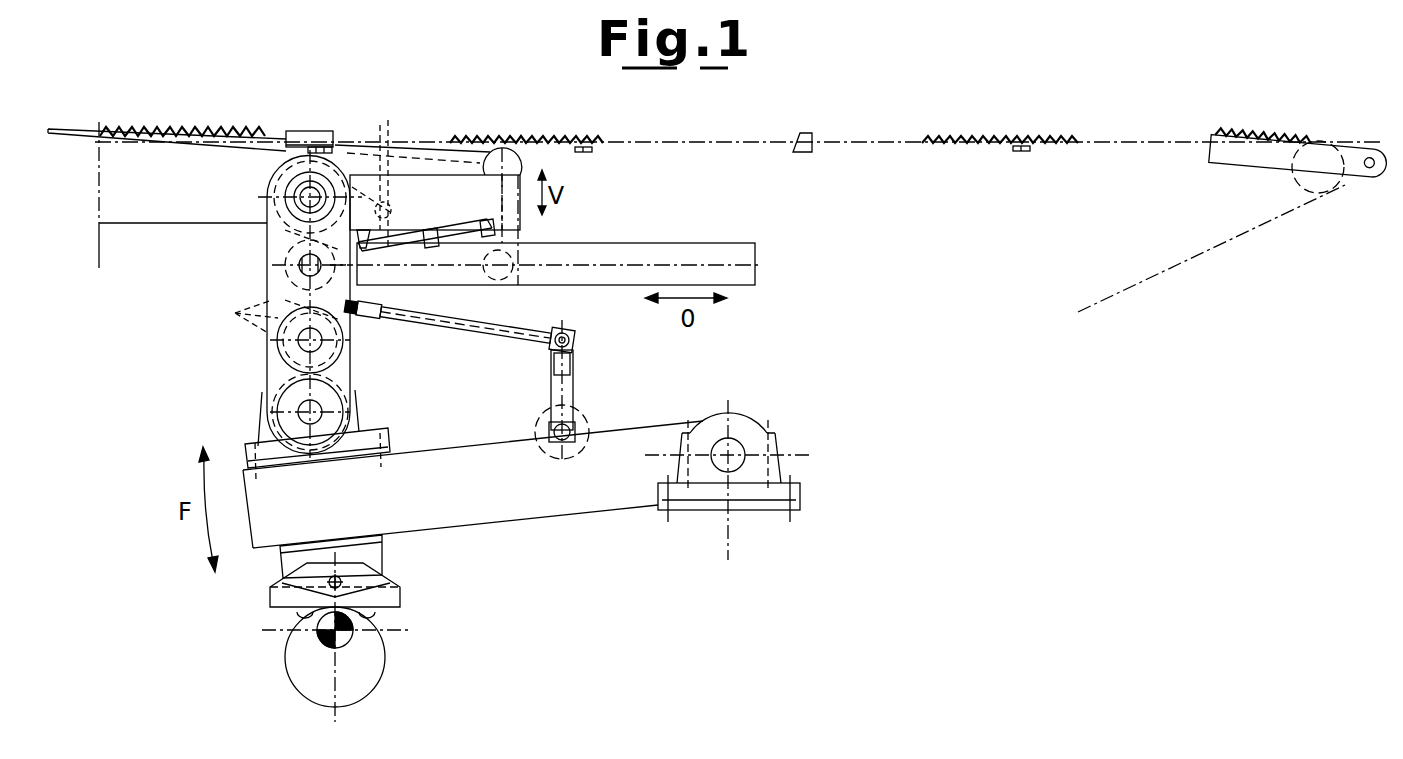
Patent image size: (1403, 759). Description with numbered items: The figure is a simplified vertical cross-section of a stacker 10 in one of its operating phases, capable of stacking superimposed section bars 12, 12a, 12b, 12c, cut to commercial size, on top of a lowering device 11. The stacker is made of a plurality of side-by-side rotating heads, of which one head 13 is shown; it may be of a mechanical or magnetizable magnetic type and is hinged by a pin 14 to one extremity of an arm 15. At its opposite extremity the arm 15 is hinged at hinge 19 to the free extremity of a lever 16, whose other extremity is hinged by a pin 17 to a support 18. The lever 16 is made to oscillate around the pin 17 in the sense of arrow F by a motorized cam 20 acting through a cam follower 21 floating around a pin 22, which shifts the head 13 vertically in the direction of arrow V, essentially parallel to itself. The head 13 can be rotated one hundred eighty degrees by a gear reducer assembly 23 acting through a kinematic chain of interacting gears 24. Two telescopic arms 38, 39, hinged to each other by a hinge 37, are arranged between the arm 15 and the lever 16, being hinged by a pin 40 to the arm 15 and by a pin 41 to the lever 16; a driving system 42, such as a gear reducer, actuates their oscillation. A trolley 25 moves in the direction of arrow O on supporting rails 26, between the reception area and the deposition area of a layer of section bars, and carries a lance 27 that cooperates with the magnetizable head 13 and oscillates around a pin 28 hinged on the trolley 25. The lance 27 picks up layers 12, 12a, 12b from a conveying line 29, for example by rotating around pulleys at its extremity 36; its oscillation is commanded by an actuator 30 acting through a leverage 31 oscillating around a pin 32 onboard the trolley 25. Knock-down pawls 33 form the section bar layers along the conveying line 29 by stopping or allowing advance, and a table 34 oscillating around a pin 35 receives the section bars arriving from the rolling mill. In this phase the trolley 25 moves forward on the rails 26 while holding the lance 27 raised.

The stacker 10 is at (437, 72).
The lowering device 11 is at (105, 237).
The section bar 12 is at (174, 134).
The section bar 12a is at (527, 137).
The section bar 12b is at (992, 138).
The section bar 12c is at (1265, 109).
The rotating head 13 is at (423, 197).
The pin 14 is at (267, 190).
The arm 15 is at (350, 368).
The lever 16 is at (485, 507).
The pin 17 is at (731, 450).
The support 18 is at (780, 470).
The hinge 19 is at (320, 409).
The motorized cam 20 is at (366, 668).
The cam follower 21 is at (398, 597).
The pin 22 is at (327, 578).
The gear reducer assembly 23 is at (267, 433).
The interacting gears 24 is at (272, 281).
The trolley 25 is at (528, 237).
The supporting rails 26 is at (717, 251).
The lance 27 is at (175, 140).
The pin 28 is at (499, 163).
The conveying line 29 is at (1150, 143).
The actuator 30 is at (465, 255).
The leverage 31 is at (346, 158).
The pin 32 is at (385, 150).
The knock-down pawls 33 is at (810, 137).
The table 34 is at (1235, 193).
The pin 35 is at (1363, 198).
The extremity 36 is at (1310, 190).
The hinge 37 is at (584, 333).
The arm 38 is at (568, 391).
The arm 39 is at (478, 337).
The pin 40 is at (373, 334).
The pin 41 is at (582, 419).
The driving system 42 is at (538, 422).